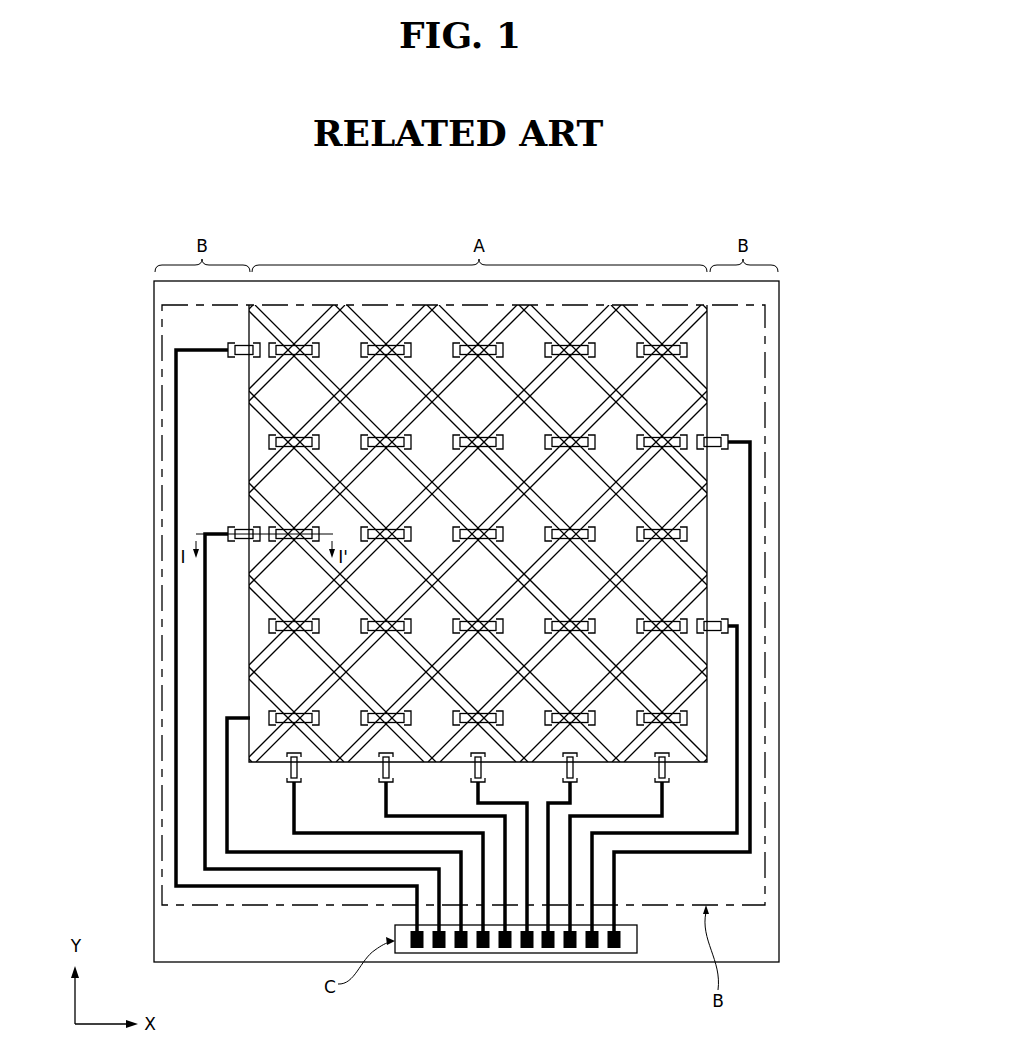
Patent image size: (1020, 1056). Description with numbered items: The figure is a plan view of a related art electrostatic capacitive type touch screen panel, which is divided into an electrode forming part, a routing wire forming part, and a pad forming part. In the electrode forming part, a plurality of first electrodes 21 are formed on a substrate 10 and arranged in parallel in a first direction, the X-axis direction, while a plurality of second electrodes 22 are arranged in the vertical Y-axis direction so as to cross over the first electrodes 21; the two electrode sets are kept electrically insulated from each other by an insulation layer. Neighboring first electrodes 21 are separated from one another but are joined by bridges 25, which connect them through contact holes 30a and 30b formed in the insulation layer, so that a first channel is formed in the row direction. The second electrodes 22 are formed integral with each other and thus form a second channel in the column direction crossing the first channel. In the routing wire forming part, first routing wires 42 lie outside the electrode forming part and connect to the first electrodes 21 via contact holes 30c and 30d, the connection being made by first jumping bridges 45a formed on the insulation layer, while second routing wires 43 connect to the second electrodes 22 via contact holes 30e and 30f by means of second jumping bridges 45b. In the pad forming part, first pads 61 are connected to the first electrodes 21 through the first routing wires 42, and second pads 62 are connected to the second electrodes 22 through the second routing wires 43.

The substrate 10 is at (766, 938).
The first electrodes 21 is at (345, 522).
The second electrodes 22 is at (670, 383).
The bridges 25 is at (662, 345).
The contact hole 30a is at (648, 428).
The contact hole 30b is at (700, 440).
The contact hole 30c is at (228, 531).
The contact hole 30d is at (257, 540).
The contact hole 30e is at (291, 782).
The contact hole 30f is at (289, 755).
The first routing wires 42 is at (227, 742).
The second routing wires 43 is at (408, 788).
The first jumping bridges 45a is at (240, 528).
The second jumping bridges 45b is at (291, 772).
The first pads 61 is at (408, 960).
The second pads 62 is at (475, 960).